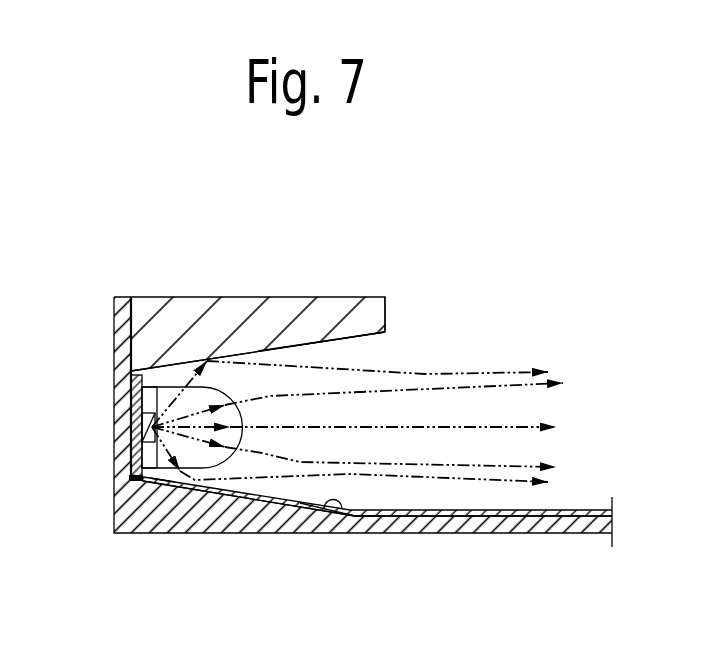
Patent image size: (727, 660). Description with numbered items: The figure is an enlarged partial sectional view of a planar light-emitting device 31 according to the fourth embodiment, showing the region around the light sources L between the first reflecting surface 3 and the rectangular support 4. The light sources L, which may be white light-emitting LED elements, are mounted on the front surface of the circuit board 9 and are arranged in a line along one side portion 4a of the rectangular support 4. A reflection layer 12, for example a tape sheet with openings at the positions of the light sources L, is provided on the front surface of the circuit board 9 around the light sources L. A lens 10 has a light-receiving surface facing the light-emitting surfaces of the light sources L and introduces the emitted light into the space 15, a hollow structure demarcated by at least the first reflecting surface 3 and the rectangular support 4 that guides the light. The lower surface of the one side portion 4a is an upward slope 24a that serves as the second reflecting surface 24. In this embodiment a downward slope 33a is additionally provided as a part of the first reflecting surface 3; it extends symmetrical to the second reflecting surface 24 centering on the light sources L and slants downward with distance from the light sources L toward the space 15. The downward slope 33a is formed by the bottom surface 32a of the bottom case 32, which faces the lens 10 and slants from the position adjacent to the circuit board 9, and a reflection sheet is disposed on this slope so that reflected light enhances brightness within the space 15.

The planar light-emitting device 31 is at (444, 216).
The rectangular support 4 is at (203, 296).
The one side portion 4a is at (298, 312).
The second reflecting surface 24 is at (370, 335).
The upward slope 24a is at (328, 338).
The reflection layer 12 is at (160, 386).
The lens 10 is at (240, 455).
The circuit board 9 is at (130, 467).
The light source L is at (160, 481).
The space 15 is at (470, 488).
The first reflecting surface 3 is at (588, 512).
The bottom case 32 is at (583, 535).
The bottom surface 32a is at (345, 522).
The downward slope 33a is at (296, 497).